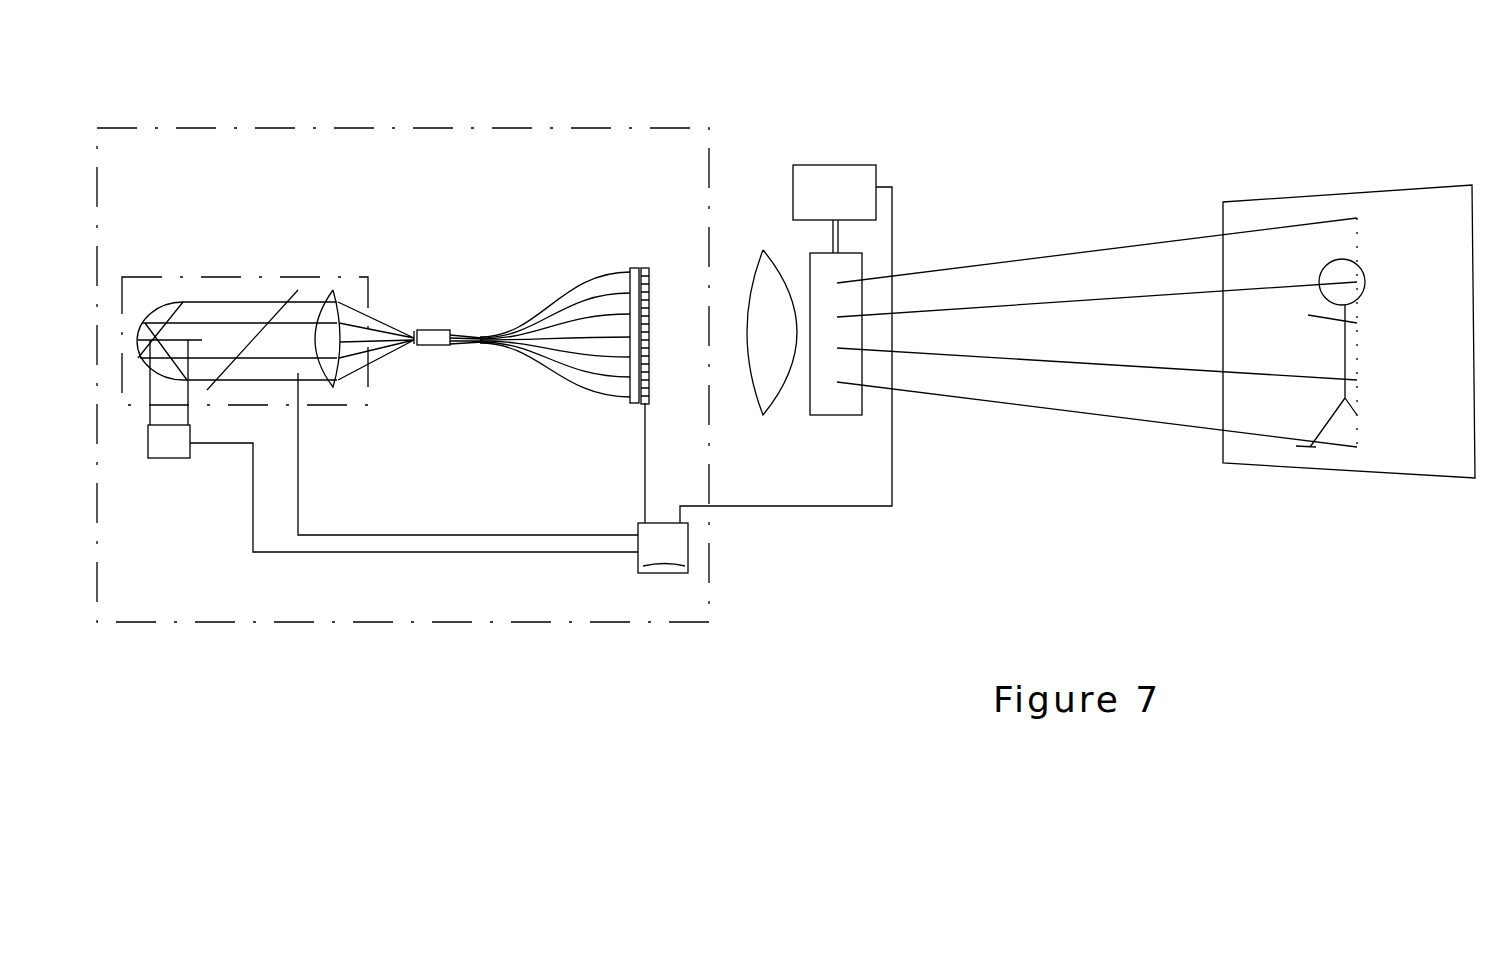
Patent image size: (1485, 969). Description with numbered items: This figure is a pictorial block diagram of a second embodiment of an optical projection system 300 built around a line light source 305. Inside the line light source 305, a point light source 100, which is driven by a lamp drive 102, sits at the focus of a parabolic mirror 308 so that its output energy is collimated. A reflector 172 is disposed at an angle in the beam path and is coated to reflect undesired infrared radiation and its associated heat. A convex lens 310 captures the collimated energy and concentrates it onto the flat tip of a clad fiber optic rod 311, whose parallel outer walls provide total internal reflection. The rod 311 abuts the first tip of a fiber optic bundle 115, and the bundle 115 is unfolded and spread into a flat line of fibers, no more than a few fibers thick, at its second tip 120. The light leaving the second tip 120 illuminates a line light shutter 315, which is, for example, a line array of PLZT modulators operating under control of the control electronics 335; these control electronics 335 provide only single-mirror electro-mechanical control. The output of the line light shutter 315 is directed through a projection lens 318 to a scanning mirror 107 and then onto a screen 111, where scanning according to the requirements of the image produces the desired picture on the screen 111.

The system 300 is at (773, 101).
The line light source 305 is at (505, 125).
The point light source 100 is at (218, 277).
The parabolic mirror 308 is at (165, 303).
The reflector 172 is at (300, 290).
The convex lens 310 is at (335, 290).
The clad fiber optic rod 311 is at (423, 330).
The fiber optic bundle 115 is at (456, 328).
The second tip 120 is at (630, 270).
The line light shutter 315 is at (641, 267).
The lamp drive 102 is at (170, 399).
The control electronics 335 is at (663, 548).
The projection lens 318 is at (763, 252).
The scanning mirror 107 is at (860, 255).
The screen 111 is at (1285, 200).